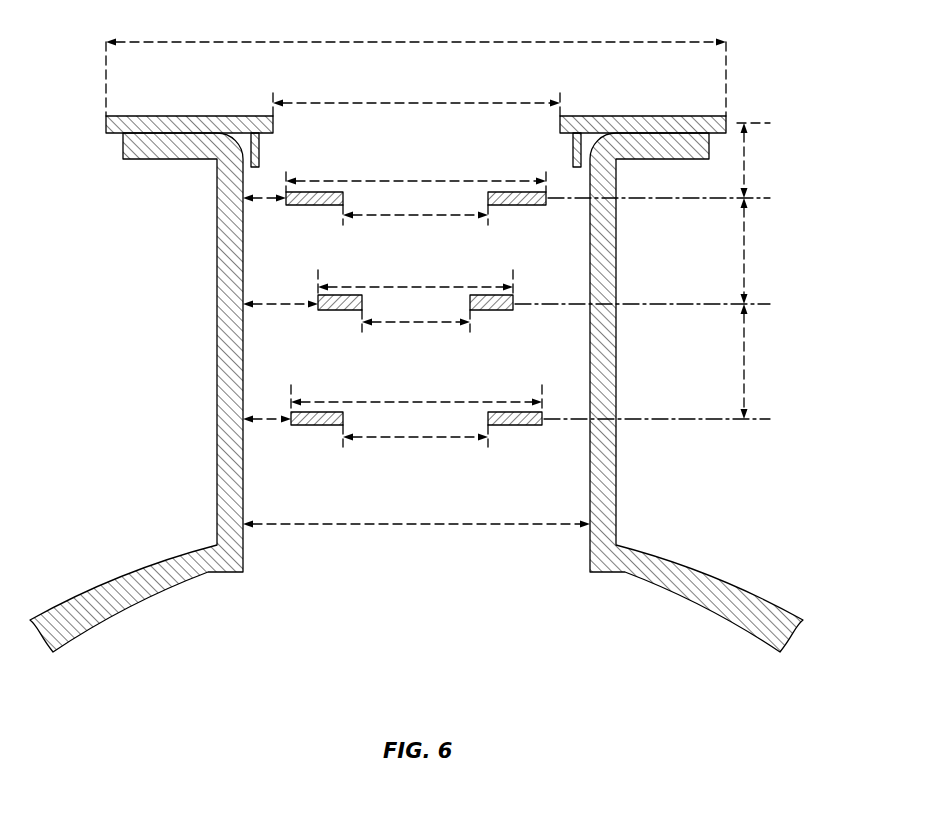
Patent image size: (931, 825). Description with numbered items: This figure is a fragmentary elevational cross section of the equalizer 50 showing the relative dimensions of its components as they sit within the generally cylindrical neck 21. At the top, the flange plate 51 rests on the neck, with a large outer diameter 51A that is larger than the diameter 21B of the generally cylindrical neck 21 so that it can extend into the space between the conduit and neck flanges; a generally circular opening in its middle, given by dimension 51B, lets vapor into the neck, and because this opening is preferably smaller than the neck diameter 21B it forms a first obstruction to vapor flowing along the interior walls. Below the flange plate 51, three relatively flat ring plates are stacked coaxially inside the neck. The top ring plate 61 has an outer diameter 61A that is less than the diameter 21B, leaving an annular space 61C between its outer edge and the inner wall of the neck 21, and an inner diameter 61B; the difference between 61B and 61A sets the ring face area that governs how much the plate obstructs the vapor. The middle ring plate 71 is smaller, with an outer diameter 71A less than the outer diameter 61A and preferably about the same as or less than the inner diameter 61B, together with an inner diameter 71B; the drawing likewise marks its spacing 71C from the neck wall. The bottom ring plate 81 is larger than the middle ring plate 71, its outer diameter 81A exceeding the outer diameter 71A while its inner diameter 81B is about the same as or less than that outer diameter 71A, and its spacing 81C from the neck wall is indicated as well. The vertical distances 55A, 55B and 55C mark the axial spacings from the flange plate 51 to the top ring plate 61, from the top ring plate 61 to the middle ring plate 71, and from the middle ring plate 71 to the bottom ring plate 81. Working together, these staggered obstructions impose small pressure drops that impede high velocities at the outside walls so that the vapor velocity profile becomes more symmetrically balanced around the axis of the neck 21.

The generally cylindrical neck 21 is at (217, 485).
The diameter of the generally cylindrical neck 21B is at (415, 524).
The equalizer 50 is at (272, 274).
The flange plate 51 is at (227, 118).
The outer diameter of the flange plate 51A is at (543, 44).
The diameter of the generally circular opening 51B is at (432, 103).
The top ring plate 61 is at (315, 205).
The outer diameter of the top ring plate 61A is at (478, 181).
The inner diameter of the top ring plate 61B is at (395, 217).
The annular space 61C is at (262, 200).
The middle ring plate 71 is at (336, 311).
The outer diameter of the middle ring plate 71A is at (455, 287).
The inner diameter of the middle ring plate 71B is at (395, 324).
The second ring gap 71C is at (275, 306).
The bottom ring plate 81 is at (316, 426).
The outer diameter of the bottom ring plate 81A is at (455, 402).
The inner diameter of the bottom ring plate 81B is at (395, 439).
The third ring gap 81C is at (263, 421).
The first axial spacing 55A is at (745, 160).
The second axial spacing 55B is at (745, 250).
The third axial spacing 55C is at (745, 350).